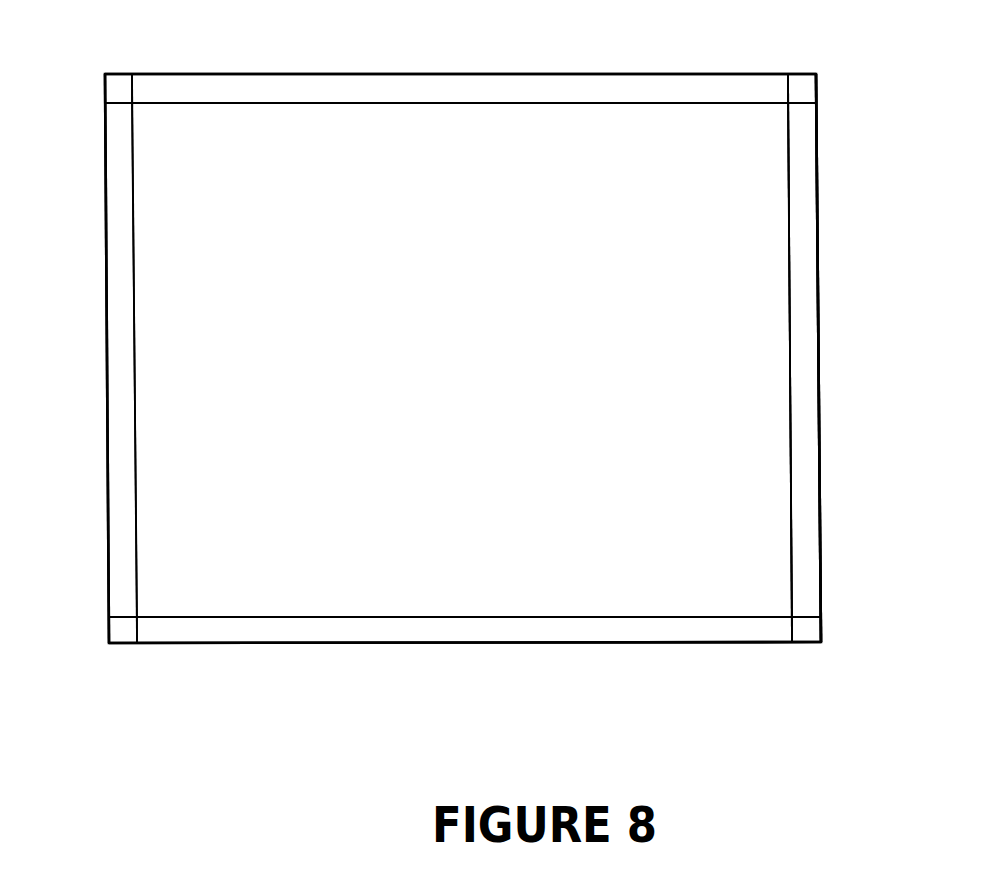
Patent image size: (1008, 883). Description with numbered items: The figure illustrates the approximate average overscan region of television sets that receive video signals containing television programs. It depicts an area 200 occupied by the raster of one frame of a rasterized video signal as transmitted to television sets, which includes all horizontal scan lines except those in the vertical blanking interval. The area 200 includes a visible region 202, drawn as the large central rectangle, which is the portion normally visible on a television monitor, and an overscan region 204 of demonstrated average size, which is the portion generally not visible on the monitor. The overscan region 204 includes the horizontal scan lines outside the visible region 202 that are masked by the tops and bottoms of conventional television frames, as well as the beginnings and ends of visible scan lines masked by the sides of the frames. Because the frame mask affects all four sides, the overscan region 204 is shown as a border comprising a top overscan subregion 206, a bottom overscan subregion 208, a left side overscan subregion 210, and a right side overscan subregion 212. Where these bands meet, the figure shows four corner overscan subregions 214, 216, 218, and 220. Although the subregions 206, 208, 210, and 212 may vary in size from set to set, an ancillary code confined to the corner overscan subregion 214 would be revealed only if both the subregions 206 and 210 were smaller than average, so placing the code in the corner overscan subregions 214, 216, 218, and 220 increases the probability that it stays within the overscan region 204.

The area 200 is at (146, 664).
The visible region 202 is at (485, 323).
The overscan region 204 is at (801, 419).
The top overscan subregion 206 is at (423, 90).
The bottom overscan subregion 208 is at (389, 627).
The left side overscan subregion 210 is at (122, 286).
The right side overscan subregion 212 is at (801, 257).
The corner overscan subregion 214 is at (117, 88).
The corner overscan subregion 216 is at (805, 88).
The corner overscan subregion 218 is at (813, 631).
The corner overscan subregion 220 is at (125, 632).